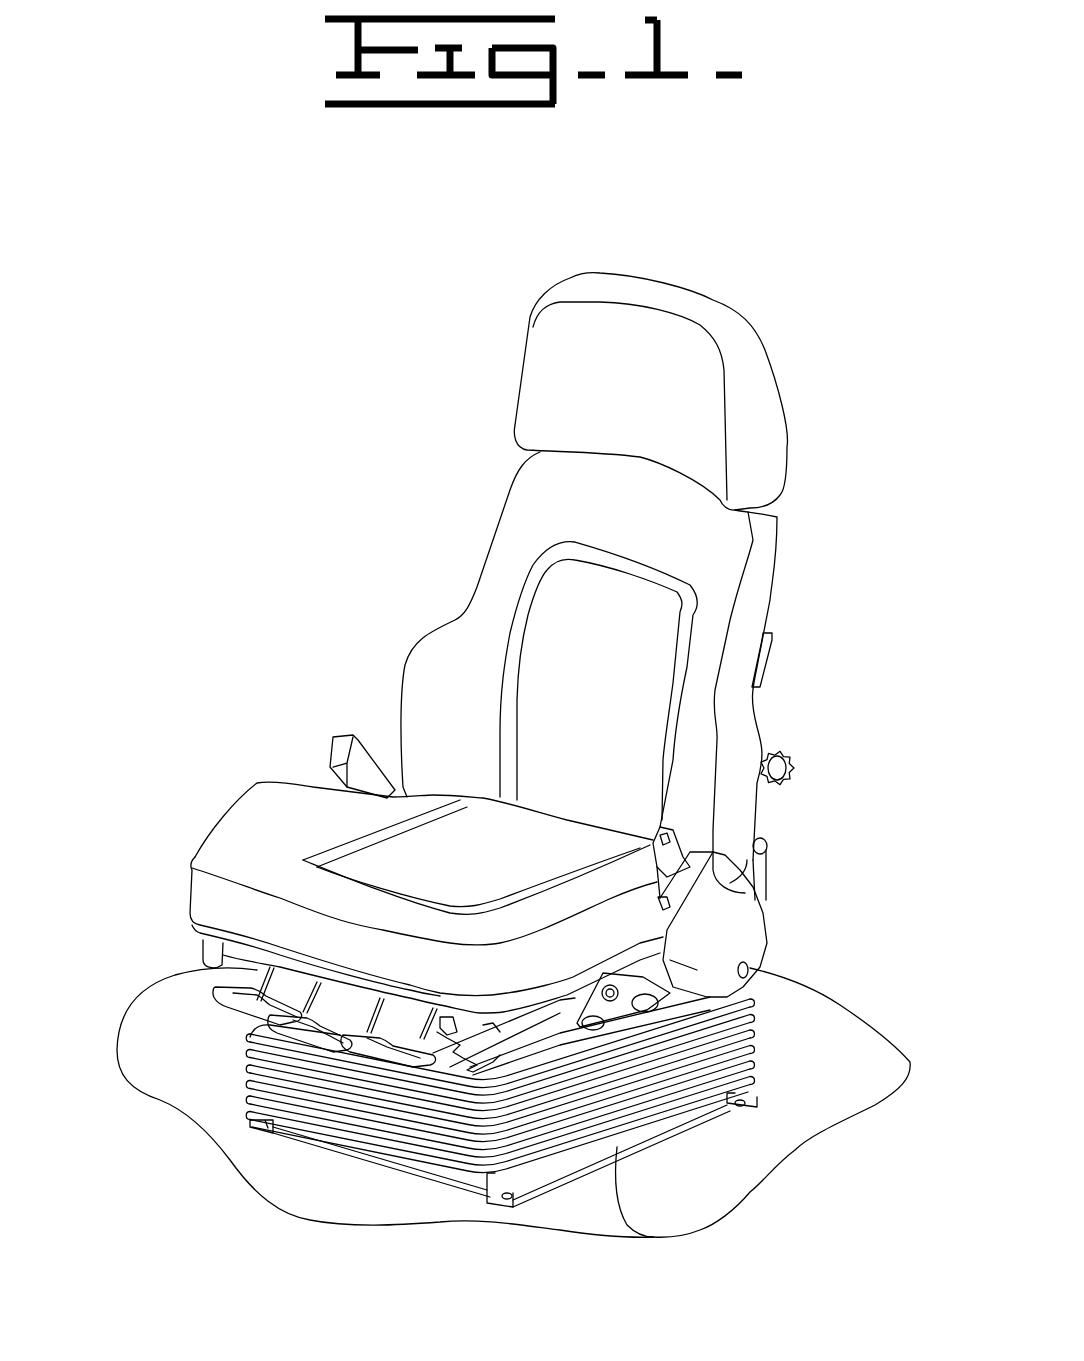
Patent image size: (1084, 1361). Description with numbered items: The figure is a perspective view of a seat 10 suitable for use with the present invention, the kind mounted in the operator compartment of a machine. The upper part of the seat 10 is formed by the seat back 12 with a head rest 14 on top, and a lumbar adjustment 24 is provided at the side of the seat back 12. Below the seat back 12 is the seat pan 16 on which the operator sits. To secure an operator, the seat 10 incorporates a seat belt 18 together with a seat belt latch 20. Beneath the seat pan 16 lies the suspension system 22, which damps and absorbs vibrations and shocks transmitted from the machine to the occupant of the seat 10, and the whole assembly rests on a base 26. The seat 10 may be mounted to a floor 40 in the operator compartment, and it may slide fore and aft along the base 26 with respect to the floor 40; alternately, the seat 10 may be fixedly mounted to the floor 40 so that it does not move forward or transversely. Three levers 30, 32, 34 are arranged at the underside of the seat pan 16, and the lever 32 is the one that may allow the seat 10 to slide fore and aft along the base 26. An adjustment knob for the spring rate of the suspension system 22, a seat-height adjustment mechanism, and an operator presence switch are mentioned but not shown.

The seat 10 is at (822, 312).
The seat back 12 is at (722, 568).
The head rest 14 is at (637, 330).
The seat pan 16 is at (297, 818).
The seat belt 18 is at (717, 907).
The seat belt latch 20 is at (367, 753).
The suspension system 22 is at (653, 1237).
The lumbar adjustment 24 is at (785, 763).
The base 26 is at (577, 1143).
The lever 30 is at (253, 998).
The lever 32 is at (293, 1017).
The lever 34 is at (377, 1043).
The floor 40 is at (402, 1208).